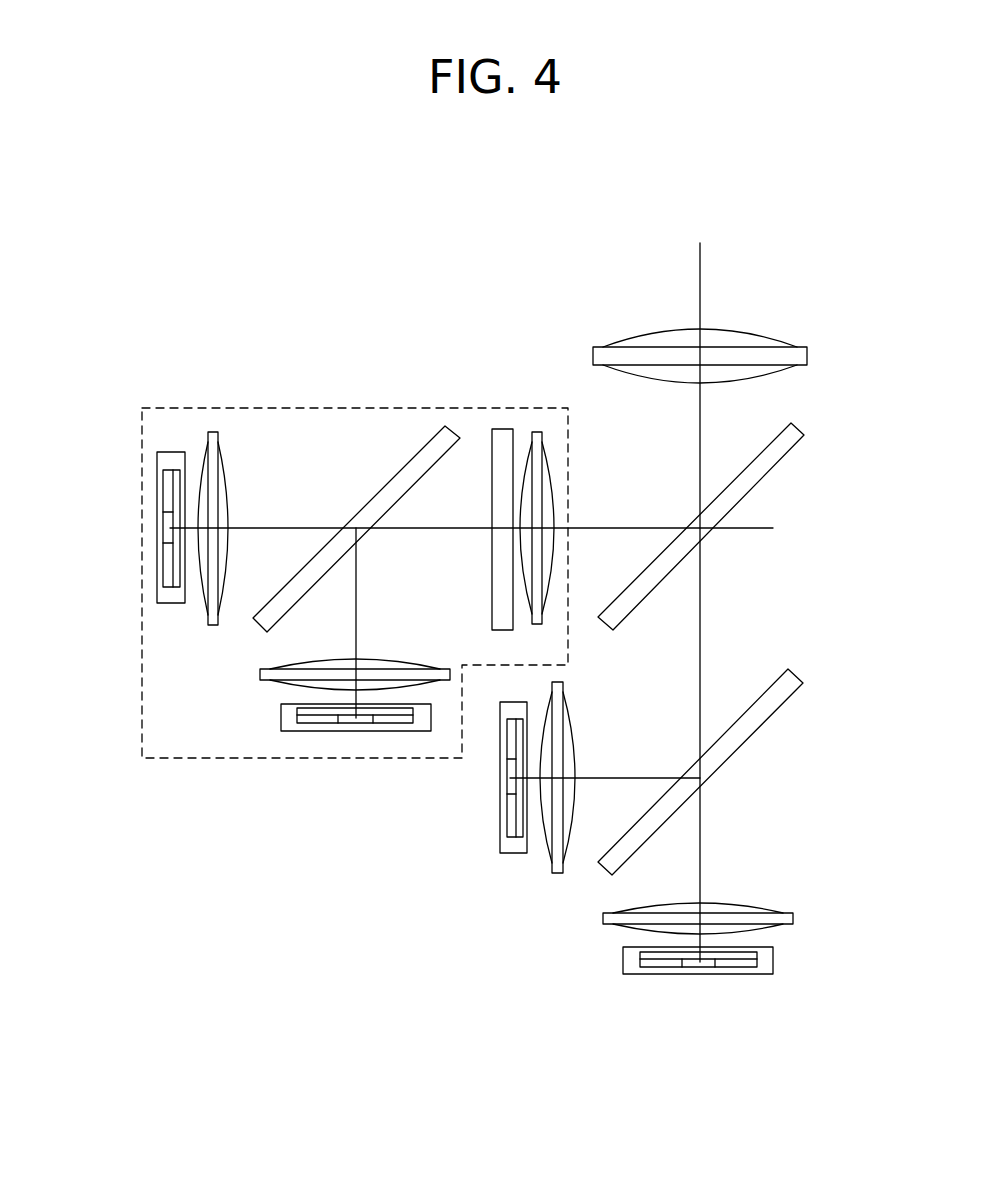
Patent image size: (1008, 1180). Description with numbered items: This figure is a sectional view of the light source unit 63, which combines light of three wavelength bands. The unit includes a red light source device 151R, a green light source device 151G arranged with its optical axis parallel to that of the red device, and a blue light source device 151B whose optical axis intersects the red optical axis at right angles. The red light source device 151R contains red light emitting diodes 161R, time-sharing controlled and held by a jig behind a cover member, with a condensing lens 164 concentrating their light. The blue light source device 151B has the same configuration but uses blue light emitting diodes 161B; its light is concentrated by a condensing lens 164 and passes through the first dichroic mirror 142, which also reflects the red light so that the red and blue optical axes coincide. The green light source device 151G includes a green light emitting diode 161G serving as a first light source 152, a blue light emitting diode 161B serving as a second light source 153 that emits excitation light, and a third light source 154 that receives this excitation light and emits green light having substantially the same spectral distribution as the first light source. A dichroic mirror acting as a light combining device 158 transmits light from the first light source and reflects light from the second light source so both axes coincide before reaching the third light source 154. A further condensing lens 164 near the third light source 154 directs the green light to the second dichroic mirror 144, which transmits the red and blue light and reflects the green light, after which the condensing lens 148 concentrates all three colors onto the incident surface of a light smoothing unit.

The light source unit 63 is at (182, 255).
The green light source device 151G is at (285, 405).
The red light source device 151R is at (533, 857).
The blue light source device 151B is at (663, 1003).
The green light emitting diode 161G is at (167, 522).
The first light source 152 is at (109, 527).
The blue light emitting diode 161B is at (707, 960).
The second light source 153 is at (348, 720).
The red light emitting diodes 161R is at (510, 785).
The condensing lens 164 is at (212, 440).
The light combining device 158 is at (405, 478).
The third light source 154 is at (505, 443).
The condensing lens 148 is at (798, 355).
The second dichroic mirror 144 is at (753, 478).
The first dichroic mirror 142 is at (757, 716).